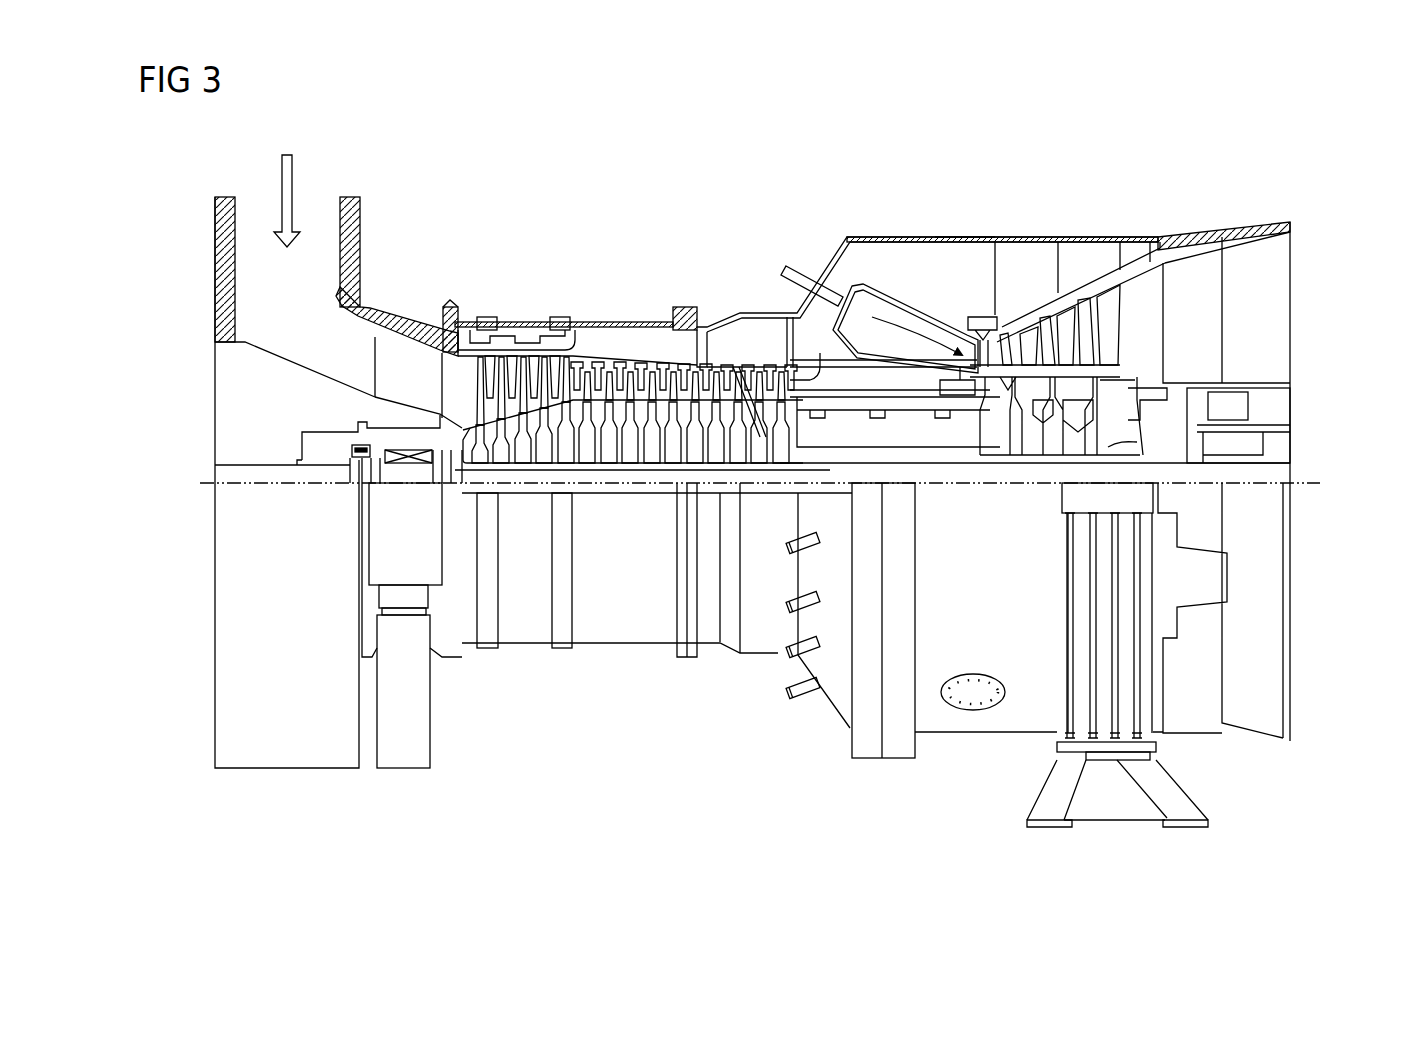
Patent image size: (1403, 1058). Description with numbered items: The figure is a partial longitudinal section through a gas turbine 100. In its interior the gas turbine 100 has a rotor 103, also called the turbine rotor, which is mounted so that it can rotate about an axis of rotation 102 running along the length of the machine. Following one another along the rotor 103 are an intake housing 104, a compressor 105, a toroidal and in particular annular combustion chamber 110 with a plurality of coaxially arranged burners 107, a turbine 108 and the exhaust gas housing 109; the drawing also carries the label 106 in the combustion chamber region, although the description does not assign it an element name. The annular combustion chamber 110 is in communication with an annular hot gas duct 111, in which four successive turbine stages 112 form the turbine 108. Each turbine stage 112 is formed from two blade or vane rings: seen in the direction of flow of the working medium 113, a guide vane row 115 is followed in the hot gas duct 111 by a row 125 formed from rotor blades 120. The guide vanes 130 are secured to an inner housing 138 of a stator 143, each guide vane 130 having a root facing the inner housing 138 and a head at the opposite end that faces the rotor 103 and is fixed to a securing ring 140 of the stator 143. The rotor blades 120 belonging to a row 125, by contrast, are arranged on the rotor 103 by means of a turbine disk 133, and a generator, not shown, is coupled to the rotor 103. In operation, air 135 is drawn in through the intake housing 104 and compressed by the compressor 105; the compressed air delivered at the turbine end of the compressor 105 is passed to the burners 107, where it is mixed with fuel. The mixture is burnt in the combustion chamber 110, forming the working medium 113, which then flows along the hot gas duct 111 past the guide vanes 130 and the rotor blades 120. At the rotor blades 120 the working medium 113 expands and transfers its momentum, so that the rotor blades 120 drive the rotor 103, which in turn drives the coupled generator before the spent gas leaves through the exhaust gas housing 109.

The gas turbine 100 is at (612, 206).
The axis of rotation 102 is at (205, 480).
The rotor 103 is at (818, 447).
The intake housing 104 is at (355, 265).
The compressor 105 is at (540, 306).
The combustion chamber 106 is at (900, 335).
The burners 107 is at (793, 263).
The turbine 108 is at (998, 206).
The exhaust gas housing 109 is at (1203, 243).
The combustion chamber 110 is at (880, 305).
The hot gas duct 111 is at (1132, 318).
The turbine stage 112 is at (1115, 206).
The working medium 113 is at (875, 303).
The guide vane row 115 is at (1080, 264).
The rotor blades 120 is at (1087, 337).
The row 125 is at (1135, 251).
The guide vanes 130 is at (1037, 335).
The turbine disk 133 is at (1147, 443).
The air 135 is at (300, 185).
The inner housing 138 is at (1027, 281).
The securing ring 140 is at (970, 357).
The stator 143 is at (965, 237).